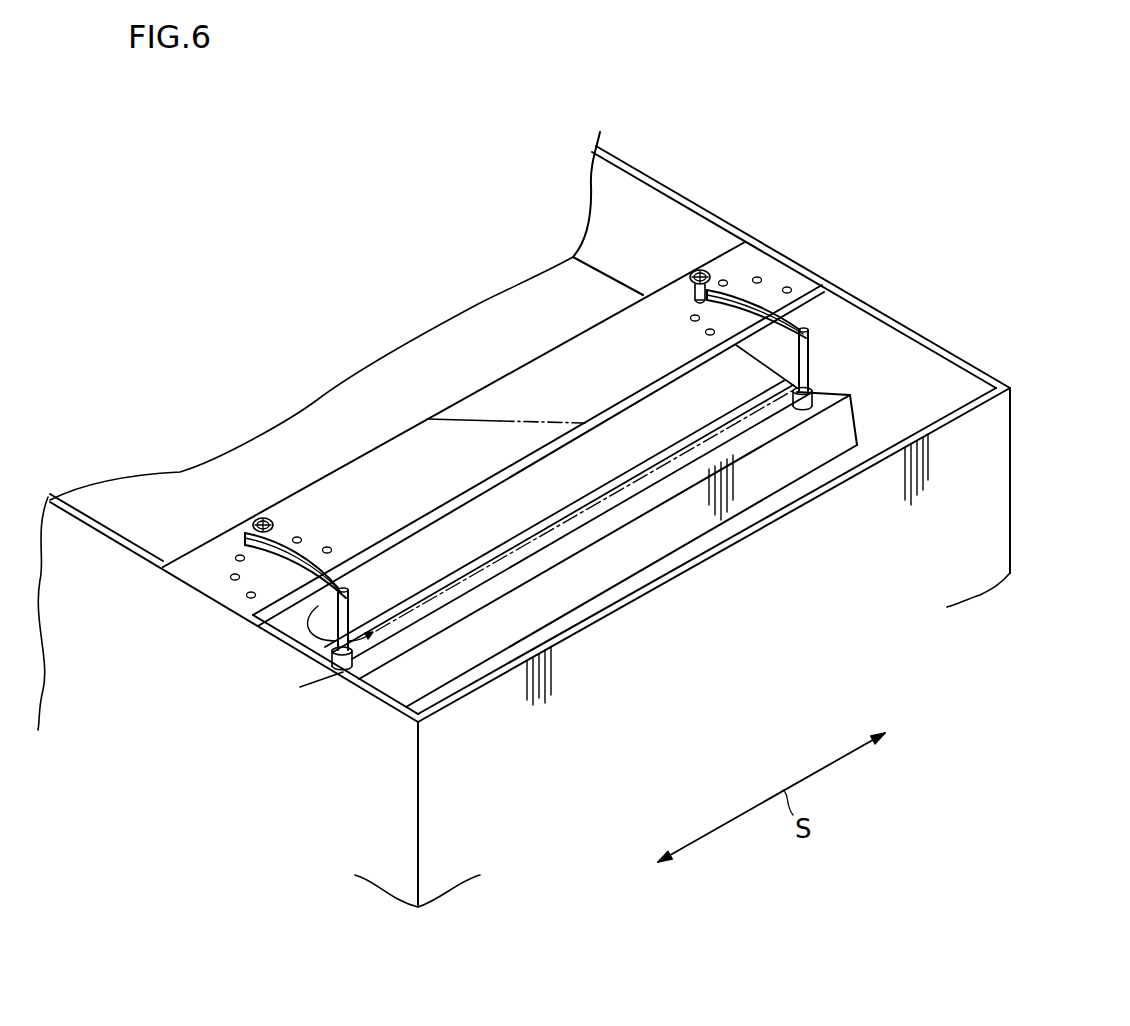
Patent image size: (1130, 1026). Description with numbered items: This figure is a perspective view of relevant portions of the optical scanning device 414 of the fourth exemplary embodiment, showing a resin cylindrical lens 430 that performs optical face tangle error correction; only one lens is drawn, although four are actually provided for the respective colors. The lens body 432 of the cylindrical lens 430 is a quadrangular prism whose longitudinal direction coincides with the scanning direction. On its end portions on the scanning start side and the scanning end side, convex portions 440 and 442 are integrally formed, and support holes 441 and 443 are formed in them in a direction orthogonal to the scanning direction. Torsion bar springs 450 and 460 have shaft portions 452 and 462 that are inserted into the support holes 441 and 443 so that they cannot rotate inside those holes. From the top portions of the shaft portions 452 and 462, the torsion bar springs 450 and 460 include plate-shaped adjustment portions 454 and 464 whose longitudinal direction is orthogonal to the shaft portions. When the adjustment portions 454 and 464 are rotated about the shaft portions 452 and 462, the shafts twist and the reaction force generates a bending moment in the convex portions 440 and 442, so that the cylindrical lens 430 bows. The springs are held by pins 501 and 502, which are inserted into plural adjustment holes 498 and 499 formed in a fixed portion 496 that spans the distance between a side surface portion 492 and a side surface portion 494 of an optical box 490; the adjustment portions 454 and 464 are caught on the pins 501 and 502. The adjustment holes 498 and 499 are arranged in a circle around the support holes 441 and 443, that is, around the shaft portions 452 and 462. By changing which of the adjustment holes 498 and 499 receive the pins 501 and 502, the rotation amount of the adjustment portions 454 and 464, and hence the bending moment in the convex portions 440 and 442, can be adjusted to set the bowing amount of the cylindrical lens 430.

The optical scanning device 414 is at (474, 100).
The cylindrical lens 430 is at (769, 476).
The lens body 432 is at (638, 546).
The convex portion 440 is at (345, 673).
The support hole 441 is at (326, 658).
The convex portion 442 is at (816, 403).
The support hole 443 is at (813, 395).
The torsion bar spring 450 is at (298, 572).
The shaft portion 452 is at (350, 602).
The adjustment portion 454 is at (305, 547).
The torsion bar spring 460 is at (772, 310).
The shaft portion 462 is at (810, 337).
The adjustment portion 464 is at (788, 286).
The optical box 490 is at (982, 457).
The side surface portion 492 is at (985, 370).
The side surface portion 494 is at (345, 813).
The fixed portion 496 is at (590, 350).
The adjustment holes 498 is at (706, 333).
The adjustment holes 499 is at (246, 595).
The pin 501 is at (262, 517).
The pin 502 is at (697, 268).